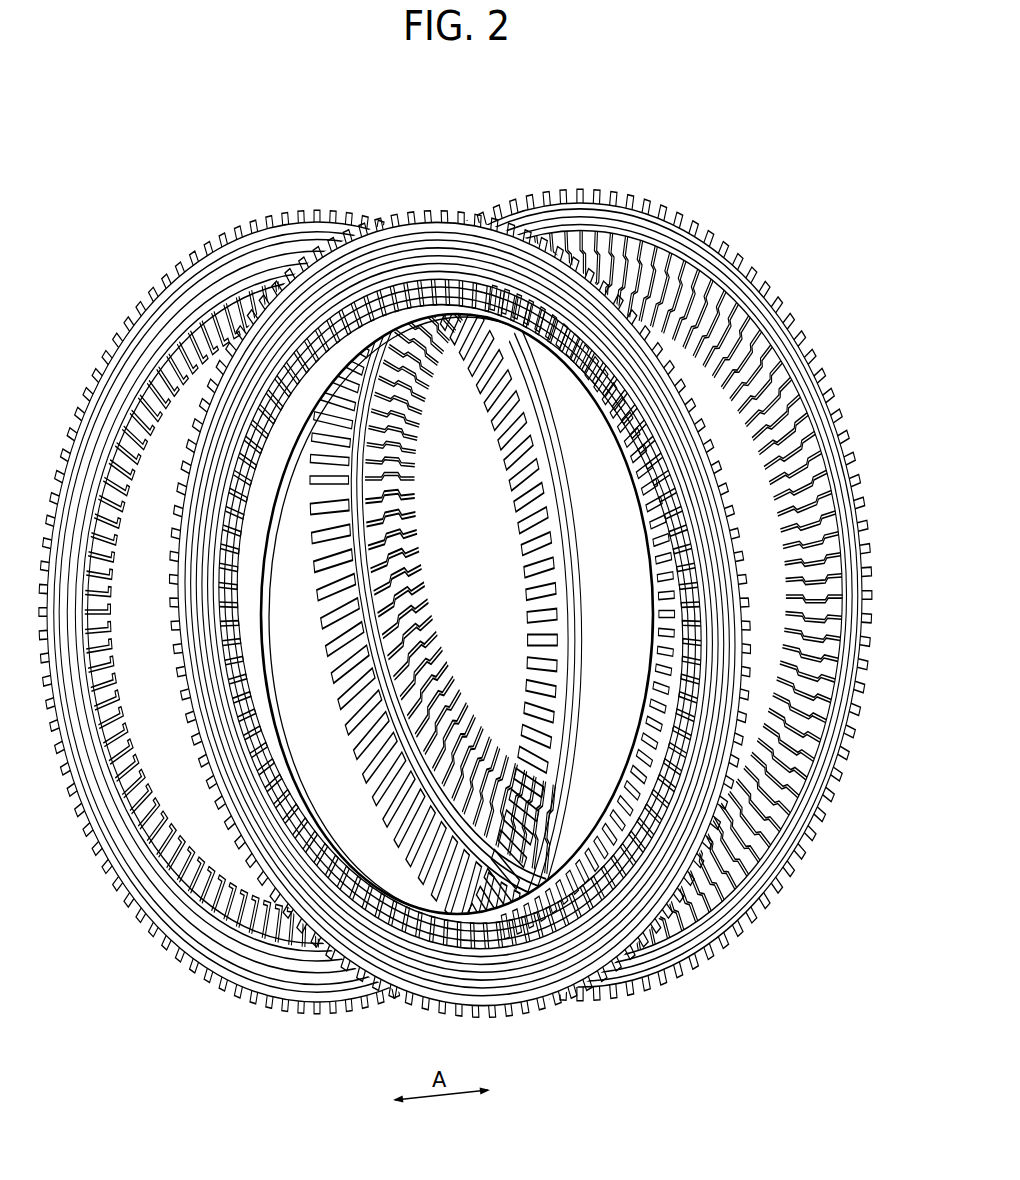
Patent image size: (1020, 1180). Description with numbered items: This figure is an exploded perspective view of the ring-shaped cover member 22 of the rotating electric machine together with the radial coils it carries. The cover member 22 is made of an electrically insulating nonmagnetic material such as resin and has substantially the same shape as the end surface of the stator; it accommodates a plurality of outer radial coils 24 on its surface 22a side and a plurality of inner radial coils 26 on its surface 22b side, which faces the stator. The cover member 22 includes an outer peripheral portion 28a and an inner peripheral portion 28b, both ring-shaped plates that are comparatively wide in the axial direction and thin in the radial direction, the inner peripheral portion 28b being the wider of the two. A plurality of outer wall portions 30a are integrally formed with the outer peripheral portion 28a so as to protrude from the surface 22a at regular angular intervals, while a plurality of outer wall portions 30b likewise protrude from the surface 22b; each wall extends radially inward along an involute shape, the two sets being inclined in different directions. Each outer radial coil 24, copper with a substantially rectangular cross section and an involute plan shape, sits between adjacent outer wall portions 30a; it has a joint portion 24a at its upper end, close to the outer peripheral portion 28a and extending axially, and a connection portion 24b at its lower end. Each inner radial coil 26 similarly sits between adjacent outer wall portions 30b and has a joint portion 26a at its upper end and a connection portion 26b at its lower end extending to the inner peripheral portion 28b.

The cover member 22 is at (464, 616).
The surface 22a is at (459, 614).
The surface 22b is at (459, 613).
The outer radial coil 24 is at (316, 659).
The joint portion 24a is at (316, 612).
The connection portion 24b is at (120, 305).
The inner radial coil 26 is at (580, 560).
The joint portion 26a is at (580, 595).
The connection portion 26b is at (729, 247).
The outer peripheral portion 28a is at (460, 614).
The inner peripheral portion 28b is at (652, 560).
The outer wall portion 30a is at (460, 614).
The outer wall portion 30b is at (459, 613).